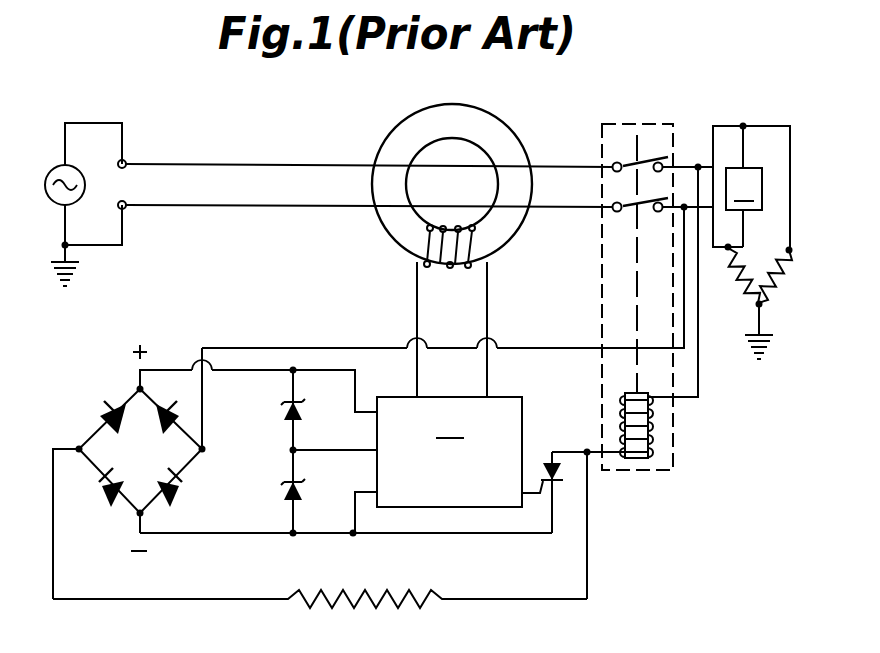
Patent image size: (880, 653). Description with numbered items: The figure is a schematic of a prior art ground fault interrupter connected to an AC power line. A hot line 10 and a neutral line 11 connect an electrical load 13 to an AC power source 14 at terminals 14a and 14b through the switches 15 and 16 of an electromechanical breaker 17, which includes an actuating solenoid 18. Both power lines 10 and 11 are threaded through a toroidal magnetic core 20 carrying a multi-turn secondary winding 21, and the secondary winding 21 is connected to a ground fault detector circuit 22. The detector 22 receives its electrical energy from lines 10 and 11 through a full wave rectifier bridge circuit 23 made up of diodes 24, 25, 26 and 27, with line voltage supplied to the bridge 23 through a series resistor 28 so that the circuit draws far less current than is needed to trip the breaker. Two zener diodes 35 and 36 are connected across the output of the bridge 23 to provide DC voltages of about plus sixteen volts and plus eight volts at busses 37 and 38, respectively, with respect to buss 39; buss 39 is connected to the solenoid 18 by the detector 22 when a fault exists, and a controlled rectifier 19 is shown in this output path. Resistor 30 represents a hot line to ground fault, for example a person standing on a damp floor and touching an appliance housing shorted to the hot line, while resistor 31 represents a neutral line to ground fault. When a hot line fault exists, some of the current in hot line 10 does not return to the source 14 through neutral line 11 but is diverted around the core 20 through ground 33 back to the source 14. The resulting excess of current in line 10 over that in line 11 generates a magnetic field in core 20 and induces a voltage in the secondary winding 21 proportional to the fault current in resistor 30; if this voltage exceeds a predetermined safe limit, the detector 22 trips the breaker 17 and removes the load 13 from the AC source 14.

The hot line 10 is at (283, 164).
The neutral line 11 is at (278, 205).
The electrical load 13 is at (744, 186).
The AC power source 14 is at (85, 185).
The terminal 14a is at (126, 161).
The terminal 14b is at (125, 210).
The switch 15 is at (628, 158).
The switch 16 is at (622, 199).
The electromechanical breaker 17 is at (648, 470).
The actuating solenoid 18 is at (654, 421).
The SCR 19 is at (548, 460).
The toroidal magnetic core 20 is at (500, 124).
The secondary winding 21 is at (428, 267).
The ground fault detector circuit 22 is at (449, 452).
The full wave rectifier bridge circuit 23 is at (94, 428).
The diode 24 is at (173, 412).
The diode 25 is at (172, 488).
The diode 26 is at (107, 490).
The diode 27 is at (104, 409).
The resistor 28 is at (392, 592).
The resistor 30 is at (770, 289).
The resistor 31 is at (739, 286).
The ground 33 is at (78, 266).
The zener diode 35 is at (300, 411).
The zener diode 36 is at (300, 493).
The buss 37 is at (355, 397).
The buss 38 is at (320, 452).
The buss 39 is at (358, 522).